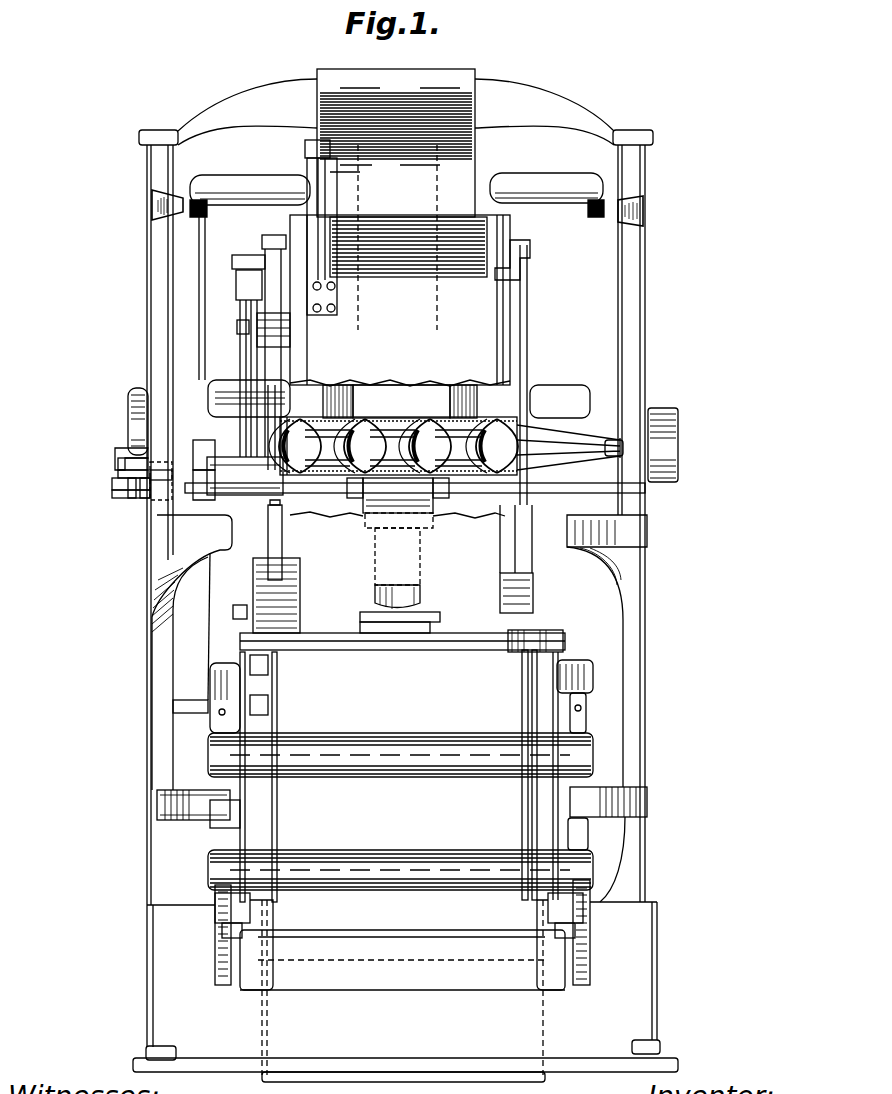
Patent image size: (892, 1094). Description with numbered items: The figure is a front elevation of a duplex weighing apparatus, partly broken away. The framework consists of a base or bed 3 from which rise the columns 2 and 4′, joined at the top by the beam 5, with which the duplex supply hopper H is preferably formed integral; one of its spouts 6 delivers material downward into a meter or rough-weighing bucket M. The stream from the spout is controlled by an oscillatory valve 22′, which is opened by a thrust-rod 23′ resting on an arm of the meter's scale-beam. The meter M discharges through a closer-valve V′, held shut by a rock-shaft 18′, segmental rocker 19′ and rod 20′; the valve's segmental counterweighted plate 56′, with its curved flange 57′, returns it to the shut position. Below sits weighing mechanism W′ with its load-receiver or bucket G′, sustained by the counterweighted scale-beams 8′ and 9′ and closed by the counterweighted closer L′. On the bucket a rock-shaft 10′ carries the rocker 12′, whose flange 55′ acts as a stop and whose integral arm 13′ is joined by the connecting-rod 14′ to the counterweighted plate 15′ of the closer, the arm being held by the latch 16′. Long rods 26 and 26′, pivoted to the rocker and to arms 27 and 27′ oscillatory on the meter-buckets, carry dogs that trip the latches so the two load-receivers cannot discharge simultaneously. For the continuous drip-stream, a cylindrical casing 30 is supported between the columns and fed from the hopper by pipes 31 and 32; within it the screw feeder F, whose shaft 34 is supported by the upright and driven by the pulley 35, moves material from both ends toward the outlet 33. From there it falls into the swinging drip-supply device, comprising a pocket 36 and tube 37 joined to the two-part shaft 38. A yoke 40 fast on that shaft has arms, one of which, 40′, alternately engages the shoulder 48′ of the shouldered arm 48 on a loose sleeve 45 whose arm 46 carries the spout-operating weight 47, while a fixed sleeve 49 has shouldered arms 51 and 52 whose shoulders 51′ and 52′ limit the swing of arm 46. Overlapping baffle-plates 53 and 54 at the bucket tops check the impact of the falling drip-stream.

The column 2 is at (152, 260).
The base 3 is at (405, 981).
The column 4′ is at (635, 289).
The beam 5 is at (396, 112).
The spout 6 is at (408, 237).
The duplex supply chute or hopper H is at (396, 143).
The meter or bucket M is at (400, 300).
The feeder or conveyer screw F is at (393, 435).
The load-receiver or bucket G′ is at (489, 775).
The closer L′ is at (402, 987).
The closer-valve V′ is at (505, 593).
The weighing mechanism W′ is at (402, 764).
The rock-shaft 18′ is at (515, 270).
The segmental rocker 19′ is at (280, 275).
The rod 20′ is at (272, 395).
The oscillatory valve 22′ is at (478, 243).
The thrust-rod 23′ is at (200, 330).
The rod 26 is at (243, 348).
The rod 26′ is at (240, 328).
The arm 27 is at (240, 296).
The arm 27′ is at (250, 268).
The casing 30 is at (398, 400).
The supply conduit or pipe 31 is at (350, 398).
The supply conduit or pipe 32 is at (460, 397).
The outlet 33 is at (398, 496).
The shaft 34 is at (400, 440).
The pulley 35 is at (665, 410).
The pocket 36 is at (435, 508).
The drip-supply spout 37 is at (422, 606).
The two-part shaft 38 is at (533, 500).
The yoke 40 is at (399, 708).
The arm of yoke 40′ is at (207, 460).
The sleeve 45 is at (145, 495).
The arm 46 is at (120, 472).
The spout-operating weight 47 is at (132, 400).
The shouldered arm 48 is at (160, 500).
The shoulder or offset 48′ is at (180, 460).
The second sleeve 49 is at (115, 484).
The shouldered arm 51 is at (120, 460).
The shoulder 51′ is at (128, 448).
The shouldered arm 52 is at (118, 495).
The shoulder 52′ is at (132, 495).
The baffle-plate 53 is at (440, 618).
The baffle-plate 54 is at (412, 640).
The segmental flange 55′ is at (252, 573).
The segmental counterweighted plate 56′ is at (278, 552).
The curved flange 57′ is at (237, 612).
The rocker 12′ is at (252, 628).
The rocker-arm 13′ is at (262, 667).
The latch 16′ is at (264, 706).
The rock-shaft 10′ is at (488, 650).
The scale-beam 9′ is at (352, 742).
The scale-beam 8′ is at (337, 860).
The connecting-rod 14′ is at (248, 795).
The counterweighted plate 15′ is at (275, 922).